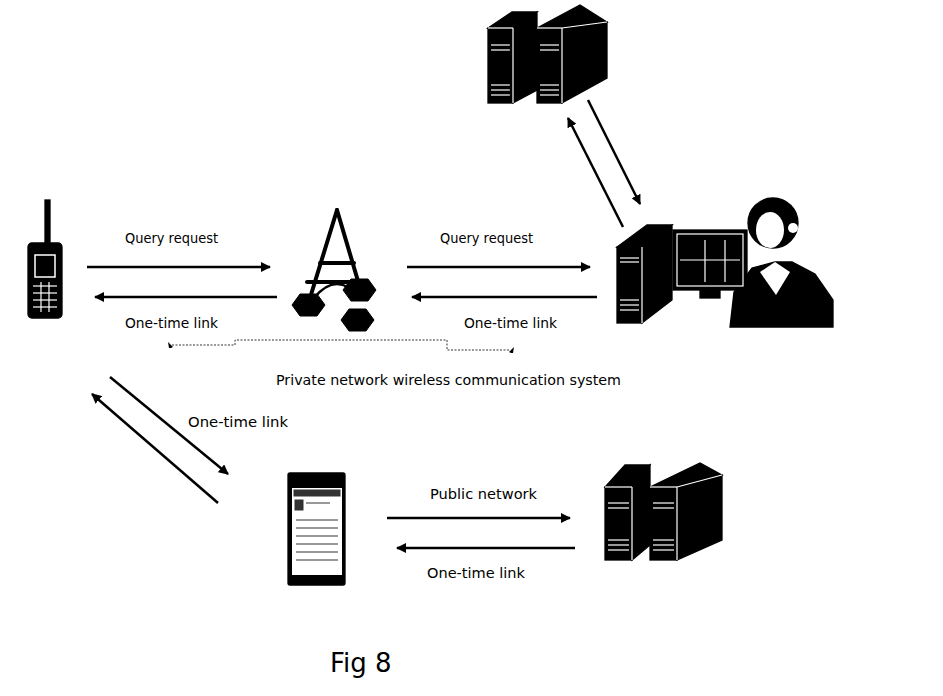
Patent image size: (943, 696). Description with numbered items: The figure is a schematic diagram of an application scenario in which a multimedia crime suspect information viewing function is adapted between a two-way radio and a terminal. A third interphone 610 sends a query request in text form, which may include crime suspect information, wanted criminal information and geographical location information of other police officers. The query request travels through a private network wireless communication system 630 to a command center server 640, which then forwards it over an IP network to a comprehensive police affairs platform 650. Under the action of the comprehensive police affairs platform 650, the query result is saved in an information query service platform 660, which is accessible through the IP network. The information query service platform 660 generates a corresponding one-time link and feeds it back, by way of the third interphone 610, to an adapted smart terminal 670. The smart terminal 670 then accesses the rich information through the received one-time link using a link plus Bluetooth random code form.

The third interphone 610 is at (57, 244).
The private network wireless communication system 630 is at (347, 258).
The command center server 640 is at (647, 232).
The comprehensive police affairs platform 650 is at (593, 57).
The information query service platform 660 is at (622, 480).
The smart terminal 670 is at (312, 473).